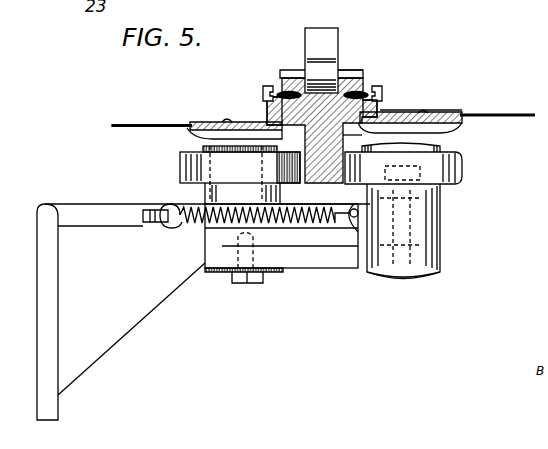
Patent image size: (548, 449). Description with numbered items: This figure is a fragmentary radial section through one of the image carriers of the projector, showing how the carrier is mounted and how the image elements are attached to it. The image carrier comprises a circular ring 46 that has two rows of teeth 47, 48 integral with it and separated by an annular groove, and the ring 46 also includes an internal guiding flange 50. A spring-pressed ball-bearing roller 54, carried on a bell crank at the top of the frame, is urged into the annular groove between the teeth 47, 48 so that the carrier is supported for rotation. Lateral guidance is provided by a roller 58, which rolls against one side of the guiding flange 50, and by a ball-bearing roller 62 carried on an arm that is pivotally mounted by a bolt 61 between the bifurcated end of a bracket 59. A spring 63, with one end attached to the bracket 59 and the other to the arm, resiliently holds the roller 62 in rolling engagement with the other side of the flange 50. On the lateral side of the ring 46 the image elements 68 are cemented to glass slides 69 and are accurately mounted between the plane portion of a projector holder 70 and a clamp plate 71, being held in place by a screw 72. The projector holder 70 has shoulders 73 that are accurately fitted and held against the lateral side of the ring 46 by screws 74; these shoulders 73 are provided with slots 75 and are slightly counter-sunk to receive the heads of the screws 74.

The circular ring 46 is at (283, 80).
The row of teeth 47 is at (291, 72).
The row of teeth 48 is at (343, 70).
The internal guiding flange 50 is at (267, 110).
The ball-bearing roller 54 is at (320, 30).
The roller 58 is at (180, 167).
The bracket 59 is at (134, 323).
The bolt 61 is at (241, 280).
The ball-bearing roller 62 is at (462, 159).
The spring 63 is at (199, 222).
The image elements 68 is at (154, 124).
The glass slides 69 is at (148, 128).
The projector holder 70 is at (447, 131).
The clamp plate 71 is at (400, 112).
The screw 72 is at (428, 110).
The shoulders 73 is at (388, 108).
The screws 74 is at (378, 94).
The slots 75 is at (265, 80).